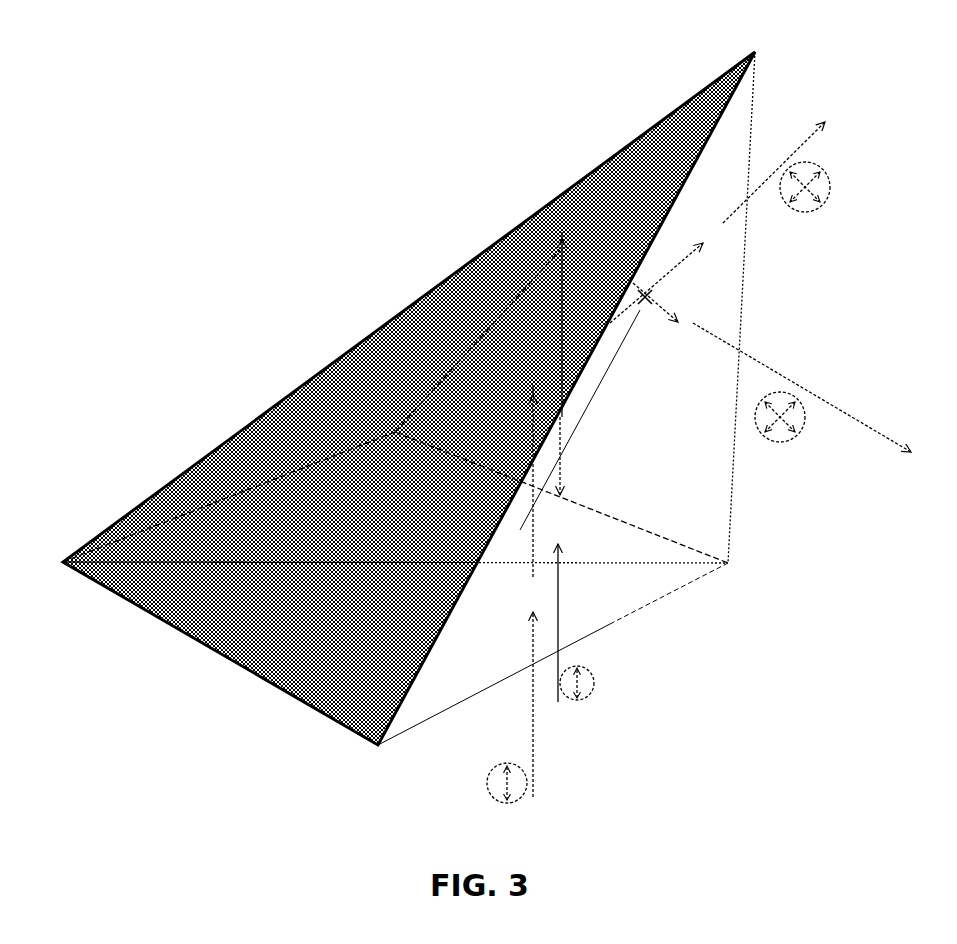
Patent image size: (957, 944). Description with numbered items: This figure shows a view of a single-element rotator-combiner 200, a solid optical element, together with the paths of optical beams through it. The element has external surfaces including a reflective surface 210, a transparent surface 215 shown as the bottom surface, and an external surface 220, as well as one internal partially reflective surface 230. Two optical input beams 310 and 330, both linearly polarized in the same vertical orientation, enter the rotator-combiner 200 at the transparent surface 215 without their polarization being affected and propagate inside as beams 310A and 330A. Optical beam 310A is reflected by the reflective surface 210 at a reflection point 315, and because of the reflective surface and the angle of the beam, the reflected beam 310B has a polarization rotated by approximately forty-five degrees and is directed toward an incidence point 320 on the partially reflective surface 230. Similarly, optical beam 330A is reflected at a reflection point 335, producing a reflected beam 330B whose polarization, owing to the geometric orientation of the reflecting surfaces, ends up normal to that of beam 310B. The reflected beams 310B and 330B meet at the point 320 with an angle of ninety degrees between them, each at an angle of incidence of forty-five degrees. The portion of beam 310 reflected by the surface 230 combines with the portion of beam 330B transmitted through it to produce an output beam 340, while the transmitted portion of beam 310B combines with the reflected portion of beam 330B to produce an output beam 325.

The single-element rotator-combiner 200 is at (762, 41).
The reflective surface 210 is at (201, 599).
The transparent surface 215 is at (480, 699).
The external surface 220 is at (690, 498).
The partially reflective surface 230 is at (605, 562).
The optical input beam 310 is at (517, 722).
The optical beam 310A is at (511, 486).
The reflected beam 310B is at (580, 420).
The reflection point 315 is at (535, 378).
The incidence point 320 is at (656, 283).
The output beam 325 is at (793, 162).
The optical input beam 330 is at (570, 639).
The optical beam 330A is at (579, 456).
The reflected beam 330B is at (588, 328).
The reflection point 335 is at (566, 229).
The output beam 340 is at (819, 403).